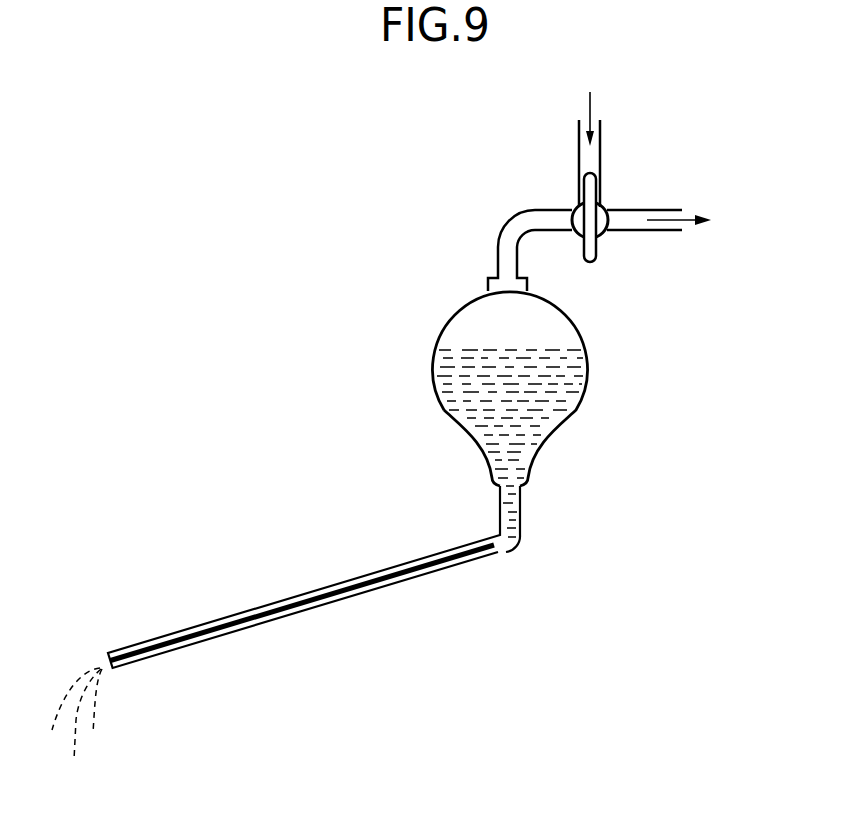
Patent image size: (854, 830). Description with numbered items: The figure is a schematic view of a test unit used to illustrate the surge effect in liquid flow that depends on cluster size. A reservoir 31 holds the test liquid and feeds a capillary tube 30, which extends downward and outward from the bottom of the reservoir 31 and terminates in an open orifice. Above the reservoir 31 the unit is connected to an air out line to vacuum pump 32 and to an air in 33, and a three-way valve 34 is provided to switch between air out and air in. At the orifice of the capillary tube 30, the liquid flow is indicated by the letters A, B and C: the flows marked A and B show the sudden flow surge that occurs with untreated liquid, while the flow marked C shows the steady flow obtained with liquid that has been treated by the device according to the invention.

The capillary tube 30 is at (333, 604).
The reservoir 31 is at (588, 370).
The air out line to vacuum pump 32 is at (679, 222).
The air in 33 is at (592, 133).
The 3 way valve 34 is at (593, 220).
The liquid flow (sudden flow surge for untreated liquid) A is at (95, 716).
The liquid flow (sudden flow surge for untreated liquid) B is at (72, 715).
The liquid flow (steady flow for treated liquid) C is at (84, 729).